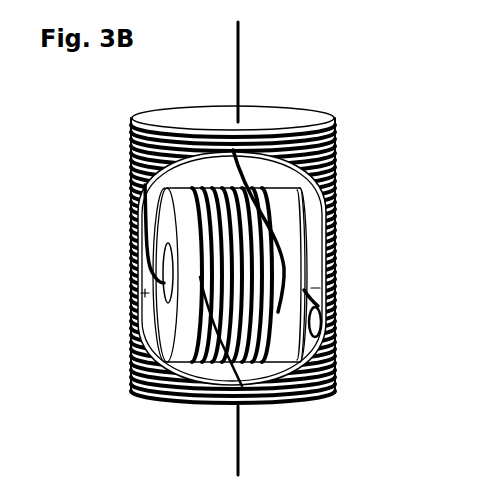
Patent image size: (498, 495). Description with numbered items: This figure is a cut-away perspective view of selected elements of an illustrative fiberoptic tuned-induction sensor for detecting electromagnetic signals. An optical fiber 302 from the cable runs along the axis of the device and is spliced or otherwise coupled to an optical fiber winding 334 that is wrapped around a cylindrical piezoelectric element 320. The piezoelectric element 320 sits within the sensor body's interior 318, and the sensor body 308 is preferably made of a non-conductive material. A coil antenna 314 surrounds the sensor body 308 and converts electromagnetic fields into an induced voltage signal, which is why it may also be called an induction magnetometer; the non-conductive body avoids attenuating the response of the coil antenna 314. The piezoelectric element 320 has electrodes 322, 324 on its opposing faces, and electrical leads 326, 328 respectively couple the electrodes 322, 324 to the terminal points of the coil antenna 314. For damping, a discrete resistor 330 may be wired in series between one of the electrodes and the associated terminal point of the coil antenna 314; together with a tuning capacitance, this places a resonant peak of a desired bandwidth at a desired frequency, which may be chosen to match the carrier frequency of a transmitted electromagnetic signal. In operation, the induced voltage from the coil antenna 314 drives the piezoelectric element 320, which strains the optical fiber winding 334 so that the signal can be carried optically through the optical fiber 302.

The optical fiber 302 is at (237, 75).
The sensor body 308 is at (307, 112).
The coil antenna 314 is at (130, 152).
The sensor body interior 318 is at (313, 205).
The cylindrical piezoelectric element 320 is at (293, 200).
The electrode 322 is at (160, 320).
The electrode 324 is at (307, 273).
The electrical lead 326 is at (145, 233).
The electrical lead 328 is at (314, 300).
The discrete resistor 330 is at (318, 327).
The optical fiber winding 334 is at (232, 190).